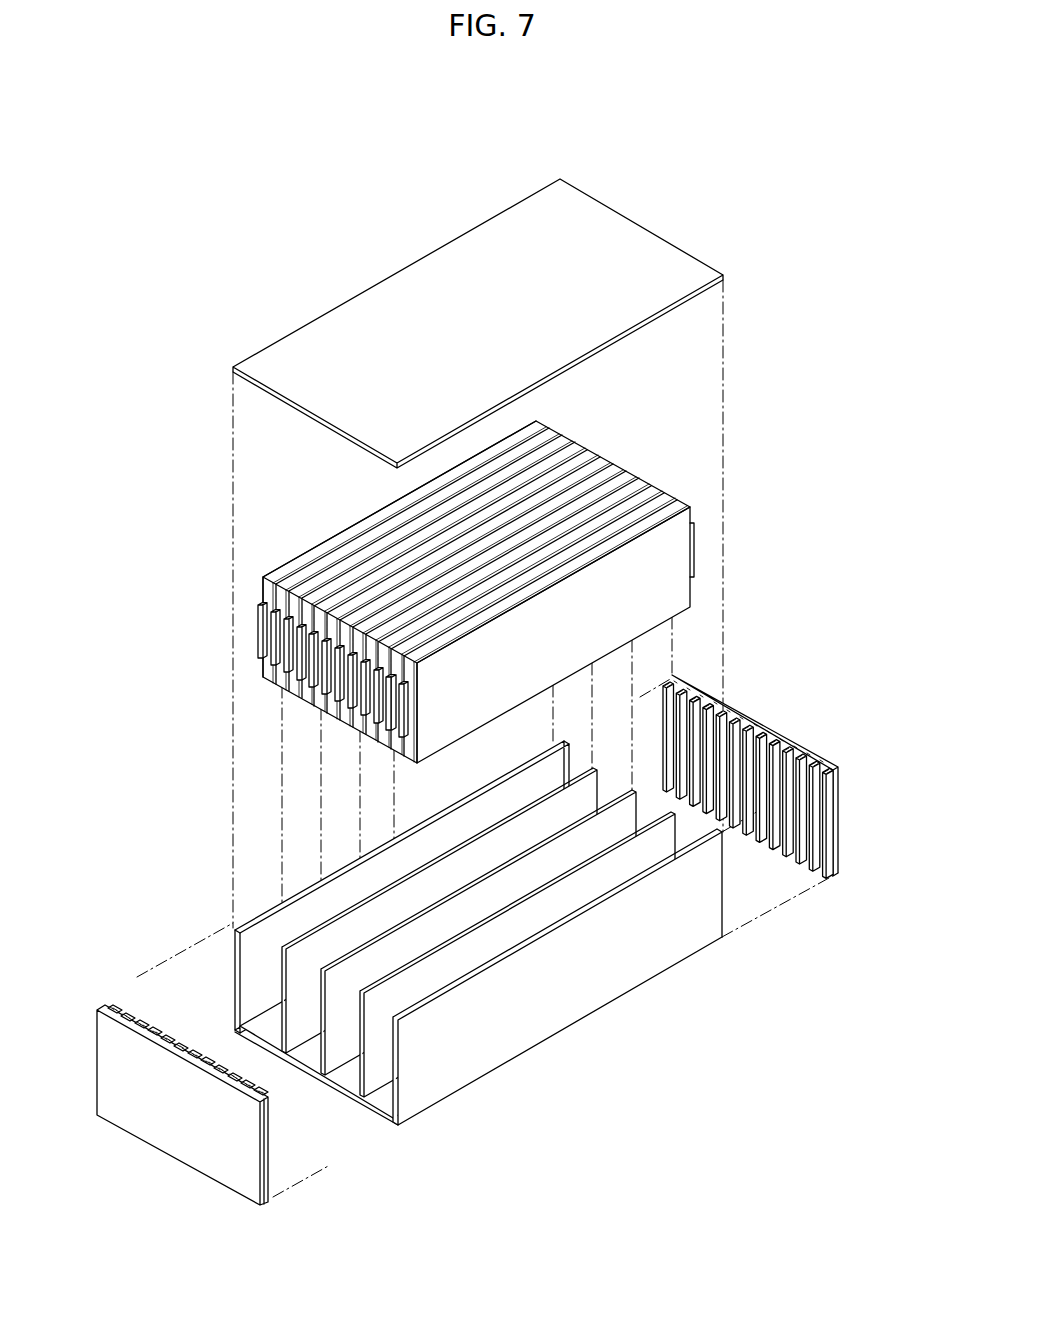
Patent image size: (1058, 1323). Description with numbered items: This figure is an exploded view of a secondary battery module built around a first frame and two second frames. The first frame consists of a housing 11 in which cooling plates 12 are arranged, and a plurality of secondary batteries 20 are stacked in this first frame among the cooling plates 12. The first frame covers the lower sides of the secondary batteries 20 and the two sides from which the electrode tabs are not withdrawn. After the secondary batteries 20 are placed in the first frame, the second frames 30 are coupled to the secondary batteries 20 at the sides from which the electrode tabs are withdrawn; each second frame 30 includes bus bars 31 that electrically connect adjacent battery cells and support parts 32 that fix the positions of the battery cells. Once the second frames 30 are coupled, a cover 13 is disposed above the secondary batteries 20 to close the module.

The housing 11 is at (483, 933).
The cooling plates 12 is at (493, 842).
The cover 13 is at (318, 343).
The secondary batteries 20 is at (682, 590).
The second frames 30 is at (158, 1152).
The bus bars 31 is at (130, 1007).
The support parts 32 is at (143, 1012).